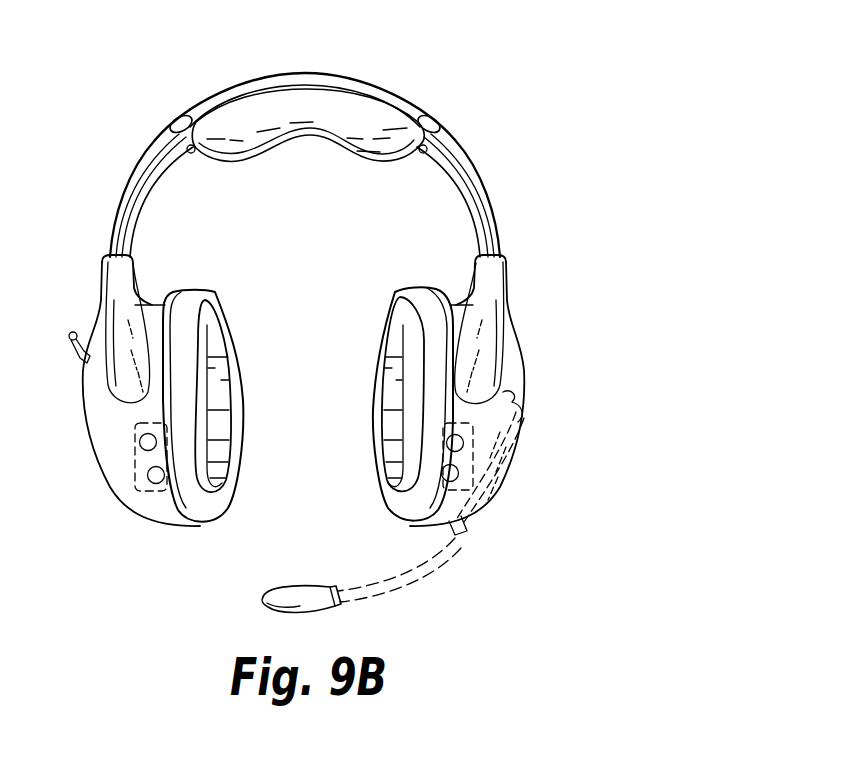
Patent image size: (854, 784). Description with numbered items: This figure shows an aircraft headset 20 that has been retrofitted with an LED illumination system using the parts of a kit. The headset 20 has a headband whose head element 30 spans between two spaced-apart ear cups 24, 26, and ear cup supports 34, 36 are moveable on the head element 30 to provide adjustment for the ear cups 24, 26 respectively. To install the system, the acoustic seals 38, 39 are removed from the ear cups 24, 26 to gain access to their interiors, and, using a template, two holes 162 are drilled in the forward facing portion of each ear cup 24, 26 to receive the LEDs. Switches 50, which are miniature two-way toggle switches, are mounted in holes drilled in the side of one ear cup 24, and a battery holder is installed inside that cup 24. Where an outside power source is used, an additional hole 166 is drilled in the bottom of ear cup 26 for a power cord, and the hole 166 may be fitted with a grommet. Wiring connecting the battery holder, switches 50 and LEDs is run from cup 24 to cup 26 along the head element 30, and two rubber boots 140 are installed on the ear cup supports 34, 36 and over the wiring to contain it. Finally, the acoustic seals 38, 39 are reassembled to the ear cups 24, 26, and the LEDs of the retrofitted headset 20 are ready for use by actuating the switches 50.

The aircraft headset 20 is at (472, 96).
The head element 30 is at (296, 72).
The ear cup support 34 is at (135, 172).
The ear cup support 36 is at (481, 173).
The rubber boots 140 is at (137, 222).
The toggle switches 50 is at (80, 332).
The ear cup 24 is at (117, 503).
The ear cup 26 is at (517, 350).
The acoustic seal 38 is at (207, 523).
The acoustic seal 39 is at (206, 413).
The holes 162 is at (150, 470).
The hole 166 is at (488, 500).